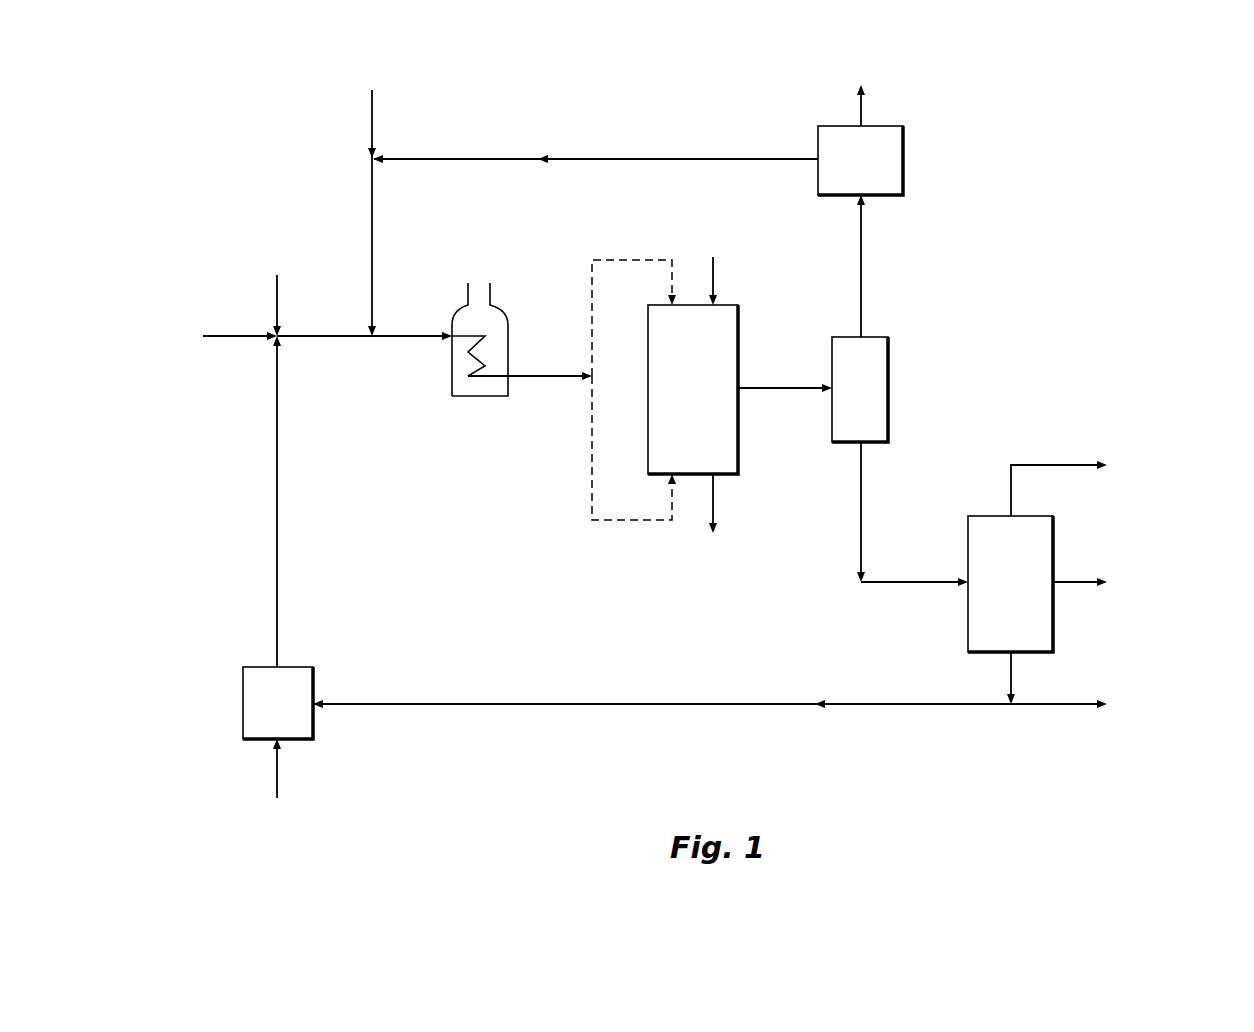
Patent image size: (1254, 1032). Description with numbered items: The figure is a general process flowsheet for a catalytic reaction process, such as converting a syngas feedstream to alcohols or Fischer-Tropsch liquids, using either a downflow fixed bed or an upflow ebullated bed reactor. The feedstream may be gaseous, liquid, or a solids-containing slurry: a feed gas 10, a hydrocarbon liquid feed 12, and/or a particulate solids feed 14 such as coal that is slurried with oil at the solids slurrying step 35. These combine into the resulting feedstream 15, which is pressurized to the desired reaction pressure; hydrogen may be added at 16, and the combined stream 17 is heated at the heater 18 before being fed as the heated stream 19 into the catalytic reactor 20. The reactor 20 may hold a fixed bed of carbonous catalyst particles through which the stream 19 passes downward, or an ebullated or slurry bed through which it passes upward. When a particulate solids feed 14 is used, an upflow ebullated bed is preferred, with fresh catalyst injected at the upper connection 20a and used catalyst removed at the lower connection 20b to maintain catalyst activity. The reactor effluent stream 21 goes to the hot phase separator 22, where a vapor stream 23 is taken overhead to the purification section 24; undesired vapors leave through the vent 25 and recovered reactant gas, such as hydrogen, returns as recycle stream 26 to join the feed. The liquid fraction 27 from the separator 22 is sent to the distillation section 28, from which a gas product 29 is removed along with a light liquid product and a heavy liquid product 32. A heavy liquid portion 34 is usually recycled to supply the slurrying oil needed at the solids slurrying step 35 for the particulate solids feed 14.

The feed gas 10 is at (275, 290).
The hydrocarbon liquid feed 12 is at (233, 338).
The solids feed 14 is at (275, 770).
The resulting feedstream 15 is at (320, 337).
The hydrogen addition 16 is at (374, 242).
The combined stream 17 is at (408, 335).
The heater 18 is at (500, 316).
The heated feed stream 19 is at (548, 378).
The catalytic reactor 20 is at (665, 390).
The upper connection 20a is at (715, 278).
The lower connection 20b is at (715, 512).
The effluent stream 21 is at (777, 388).
The hot phase separator 22 is at (860, 389).
The vapor stream 23 is at (862, 265).
The purification section 24 is at (860, 160).
The vent 25 is at (862, 112).
The recycle stream 26 is at (600, 158).
The liquid fraction 27 is at (862, 492).
The distillation section 28 is at (1010, 584).
The gas product 29 is at (1042, 465).
The heavy liquid product 32 is at (1004, 674).
The heavy liquid portion 34 is at (697, 704).
The solids slurrying step 35 is at (278, 703).